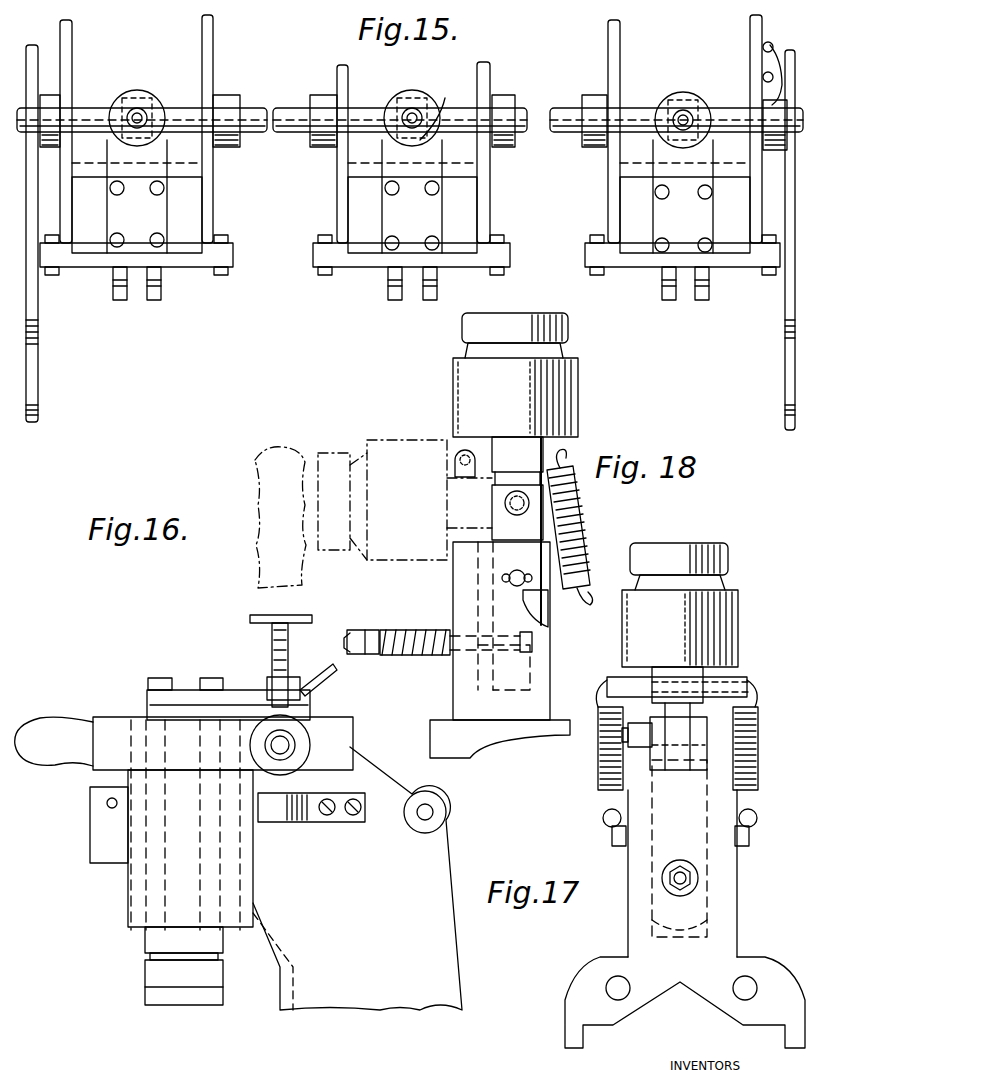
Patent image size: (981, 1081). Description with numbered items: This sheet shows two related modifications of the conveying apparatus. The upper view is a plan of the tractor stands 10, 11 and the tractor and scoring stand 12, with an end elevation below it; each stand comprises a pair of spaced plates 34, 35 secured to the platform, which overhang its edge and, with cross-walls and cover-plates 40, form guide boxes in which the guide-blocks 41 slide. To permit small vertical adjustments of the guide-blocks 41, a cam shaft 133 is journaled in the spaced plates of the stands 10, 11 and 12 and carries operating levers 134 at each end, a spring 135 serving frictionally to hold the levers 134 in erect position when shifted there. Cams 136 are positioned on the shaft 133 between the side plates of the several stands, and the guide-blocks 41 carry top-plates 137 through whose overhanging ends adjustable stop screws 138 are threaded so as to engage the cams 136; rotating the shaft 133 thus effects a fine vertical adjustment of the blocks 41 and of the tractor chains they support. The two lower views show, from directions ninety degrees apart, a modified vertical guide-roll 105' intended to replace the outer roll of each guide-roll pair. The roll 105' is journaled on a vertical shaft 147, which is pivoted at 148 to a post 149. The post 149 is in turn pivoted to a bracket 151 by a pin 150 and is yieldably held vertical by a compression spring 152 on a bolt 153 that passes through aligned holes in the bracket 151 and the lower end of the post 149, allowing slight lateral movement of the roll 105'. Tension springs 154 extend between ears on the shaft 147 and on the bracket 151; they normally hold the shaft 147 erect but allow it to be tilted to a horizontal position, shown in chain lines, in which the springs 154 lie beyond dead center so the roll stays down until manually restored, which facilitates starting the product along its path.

In FIG. 15, the tractor stand 10 is at (676, 75).
In FIG. 15, the tractor stand 11 is at (486, 78).
In FIG. 15, the tractor and scoring stand 12 is at (142, 75).
In FIG. 15, the plate 34 is at (212, 70).
In FIG. 16, the plate 34 is at (347, 995).
In FIG. 15, the plate 35 is at (64, 30).
In FIG. 15, the cover-plate 40 is at (196, 266).
In FIG. 16, the cover-plate 40 is at (128, 890).
In FIG. 15, the guide-block 41 is at (190, 192).
In FIG. 16, the guide-block 41 is at (150, 938).
In FIG. 18, the modified roll 105' is at (545, 375).
In FIG. 17, the modified roll 105' is at (707, 605).
In FIG. 15, the cam shaft 133 is at (527, 115).
In FIG. 16, the cam shaft 133 is at (290, 745).
In FIG. 15, the operating lever 134 is at (38, 335).
In FIG. 16, the operating lever 134 is at (110, 730).
In FIG. 15, the spring 135 is at (780, 55).
In FIG. 16, the spring 135 is at (280, 822).
In FIG. 15, the cam 136 is at (448, 84).
In FIG. 16, the cam 136 is at (290, 720).
In FIG. 15, the top-plate 137 is at (393, 215).
In FIG. 16, the top-plate 137 is at (243, 692).
In FIG. 15, the adjustable stop screw 138 is at (118, 95).
In FIG. 16, the adjustable stop screw 138 is at (272, 642).
In FIG. 18, the vertical shaft 147 is at (530, 446).
In FIG. 17, the vertical shaft 147 is at (700, 680).
In FIG. 18, the pivot 148 is at (505, 503).
In FIG. 17, the pivot 148 is at (636, 738).
In FIG. 18, the post 149 is at (505, 516).
In FIG. 17, the post 149 is at (710, 713).
In FIG. 18, the pin 150 is at (517, 572).
In FIG. 17, the pin 150 is at (612, 812).
In FIG. 18, the bracket 151 is at (463, 588).
In FIG. 17, the bracket 151 is at (722, 884).
In FIG. 18, the compression spring 152 is at (432, 636).
In FIG. 18, the bolt 153 is at (353, 630).
In FIG. 17, the bolt 153 is at (690, 884).
In FIG. 18, the tension spring 154 is at (575, 543).
In FIG. 17, the tension spring 154 is at (758, 788).